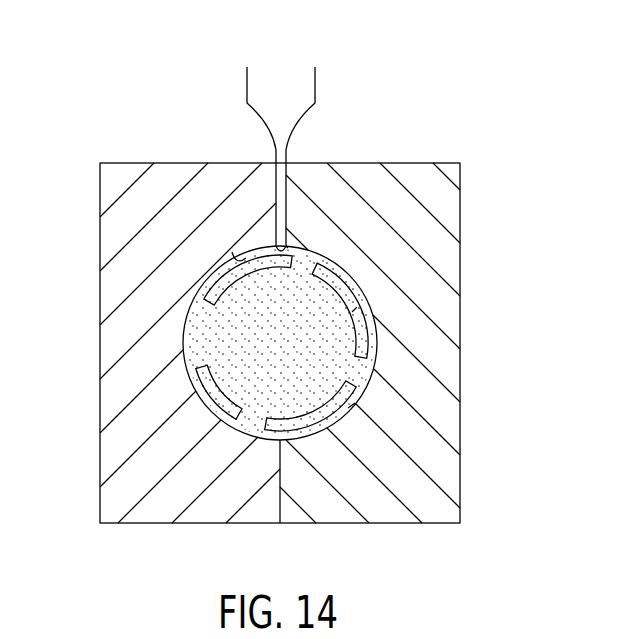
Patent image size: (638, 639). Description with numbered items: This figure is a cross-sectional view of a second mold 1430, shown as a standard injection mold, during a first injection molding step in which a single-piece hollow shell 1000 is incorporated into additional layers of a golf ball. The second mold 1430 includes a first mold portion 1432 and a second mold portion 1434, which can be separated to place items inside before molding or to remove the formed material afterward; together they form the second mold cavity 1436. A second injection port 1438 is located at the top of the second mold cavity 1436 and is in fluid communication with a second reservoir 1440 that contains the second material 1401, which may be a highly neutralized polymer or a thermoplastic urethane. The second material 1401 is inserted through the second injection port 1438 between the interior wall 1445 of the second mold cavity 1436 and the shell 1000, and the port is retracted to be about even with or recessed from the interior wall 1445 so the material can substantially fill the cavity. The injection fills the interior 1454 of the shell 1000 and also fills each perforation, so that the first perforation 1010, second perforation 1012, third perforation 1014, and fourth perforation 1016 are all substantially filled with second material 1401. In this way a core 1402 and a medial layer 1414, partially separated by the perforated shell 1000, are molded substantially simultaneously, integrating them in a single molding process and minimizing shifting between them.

The second mold 1430 is at (496, 186).
The second mold portion 1434 is at (125, 175).
The first mold portion 1432 is at (420, 178).
The second reservoir 1440 is at (305, 98).
The second material 1401 is at (306, 56).
The core 1402 is at (305, 351).
The first perforation 1010 is at (322, 262).
The second perforation 1012 is at (205, 322).
The medial layer 1414 is at (345, 408).
The fourth perforation 1016 is at (348, 406).
The single-piece hollow shell 1000 is at (357, 307).
The second injection port 1438 is at (288, 246).
The interior wall 1445 is at (242, 253).
The interior 1454 is at (200, 411).
The second mold cavity 1436 is at (195, 430).
The third perforation 1014 is at (224, 370).